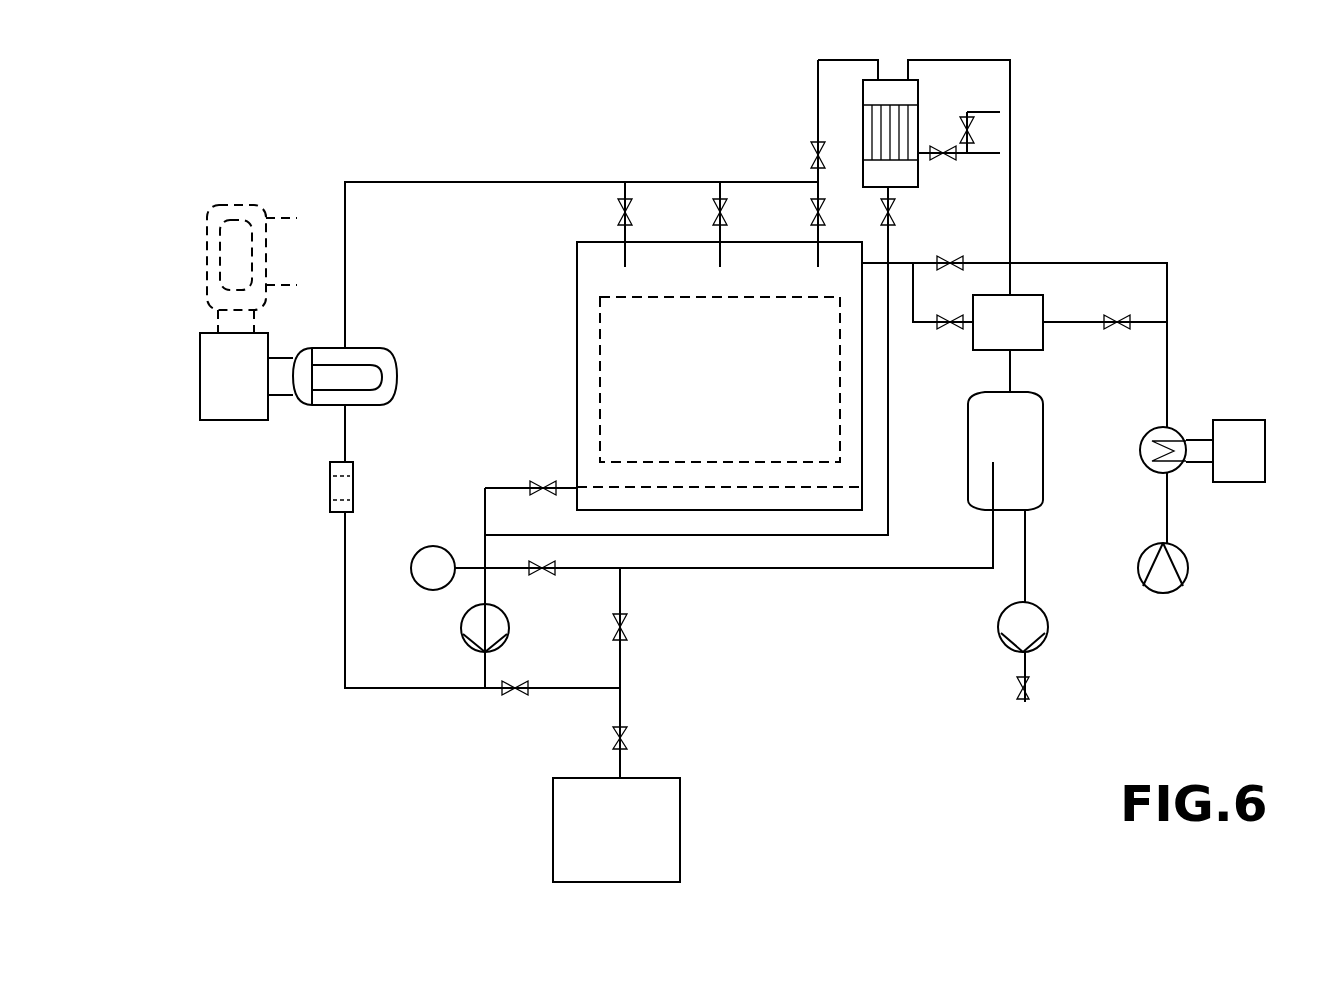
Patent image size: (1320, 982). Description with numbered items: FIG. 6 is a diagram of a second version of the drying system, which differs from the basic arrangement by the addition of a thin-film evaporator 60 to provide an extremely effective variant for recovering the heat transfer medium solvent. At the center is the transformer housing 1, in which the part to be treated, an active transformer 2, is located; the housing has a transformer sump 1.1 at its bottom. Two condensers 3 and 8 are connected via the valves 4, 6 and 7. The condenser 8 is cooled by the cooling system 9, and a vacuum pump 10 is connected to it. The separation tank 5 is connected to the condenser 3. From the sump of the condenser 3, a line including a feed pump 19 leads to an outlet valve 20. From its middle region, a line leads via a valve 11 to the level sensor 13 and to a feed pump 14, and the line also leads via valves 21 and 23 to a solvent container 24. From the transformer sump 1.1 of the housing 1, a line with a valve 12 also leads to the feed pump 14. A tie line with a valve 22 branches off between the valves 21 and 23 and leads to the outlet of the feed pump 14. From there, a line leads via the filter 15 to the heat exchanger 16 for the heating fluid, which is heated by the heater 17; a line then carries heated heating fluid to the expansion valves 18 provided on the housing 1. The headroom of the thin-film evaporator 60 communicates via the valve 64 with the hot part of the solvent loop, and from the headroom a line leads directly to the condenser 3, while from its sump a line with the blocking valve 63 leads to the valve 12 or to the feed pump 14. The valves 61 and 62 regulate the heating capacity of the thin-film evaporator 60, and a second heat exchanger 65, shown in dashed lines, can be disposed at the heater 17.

The transformer housing 1 is at (575, 263).
The transformer sump 1.1 is at (718, 502).
The active transformer 2 is at (598, 368).
The condenser 3 is at (1040, 349).
The valve 4 is at (950, 332).
The separation tank 5 is at (1043, 446).
The valve 6 is at (1117, 332).
The valve 7 is at (950, 254).
The condenser 8 is at (1141, 452).
The cooling system 9 is at (1243, 424).
The vacuum pump 10 is at (1138, 568).
The valve 11 is at (542, 580).
The valve 12 is at (545, 478).
The level sensor 13 is at (412, 576).
The feed pump 14 is at (466, 626).
The filter 15 is at (353, 487).
The heat exchanger 16 is at (372, 350).
The heater 17 is at (240, 425).
The expansion valves 18 is at (617, 210).
The feed pump 19 is at (1045, 626).
The outlet valve 20 is at (1033, 688).
The valve 21 is at (630, 627).
The valve 22 is at (516, 698).
The valve 23 is at (610, 740).
The solvent container 24 is at (652, 792).
The thin-film evaporator 60 is at (863, 130).
The valve 61 is at (945, 163).
The valve 62 is at (978, 132).
The blocking valve 63 is at (880, 212).
The valve 64 is at (810, 153).
The second heat exchanger 65 is at (228, 205).